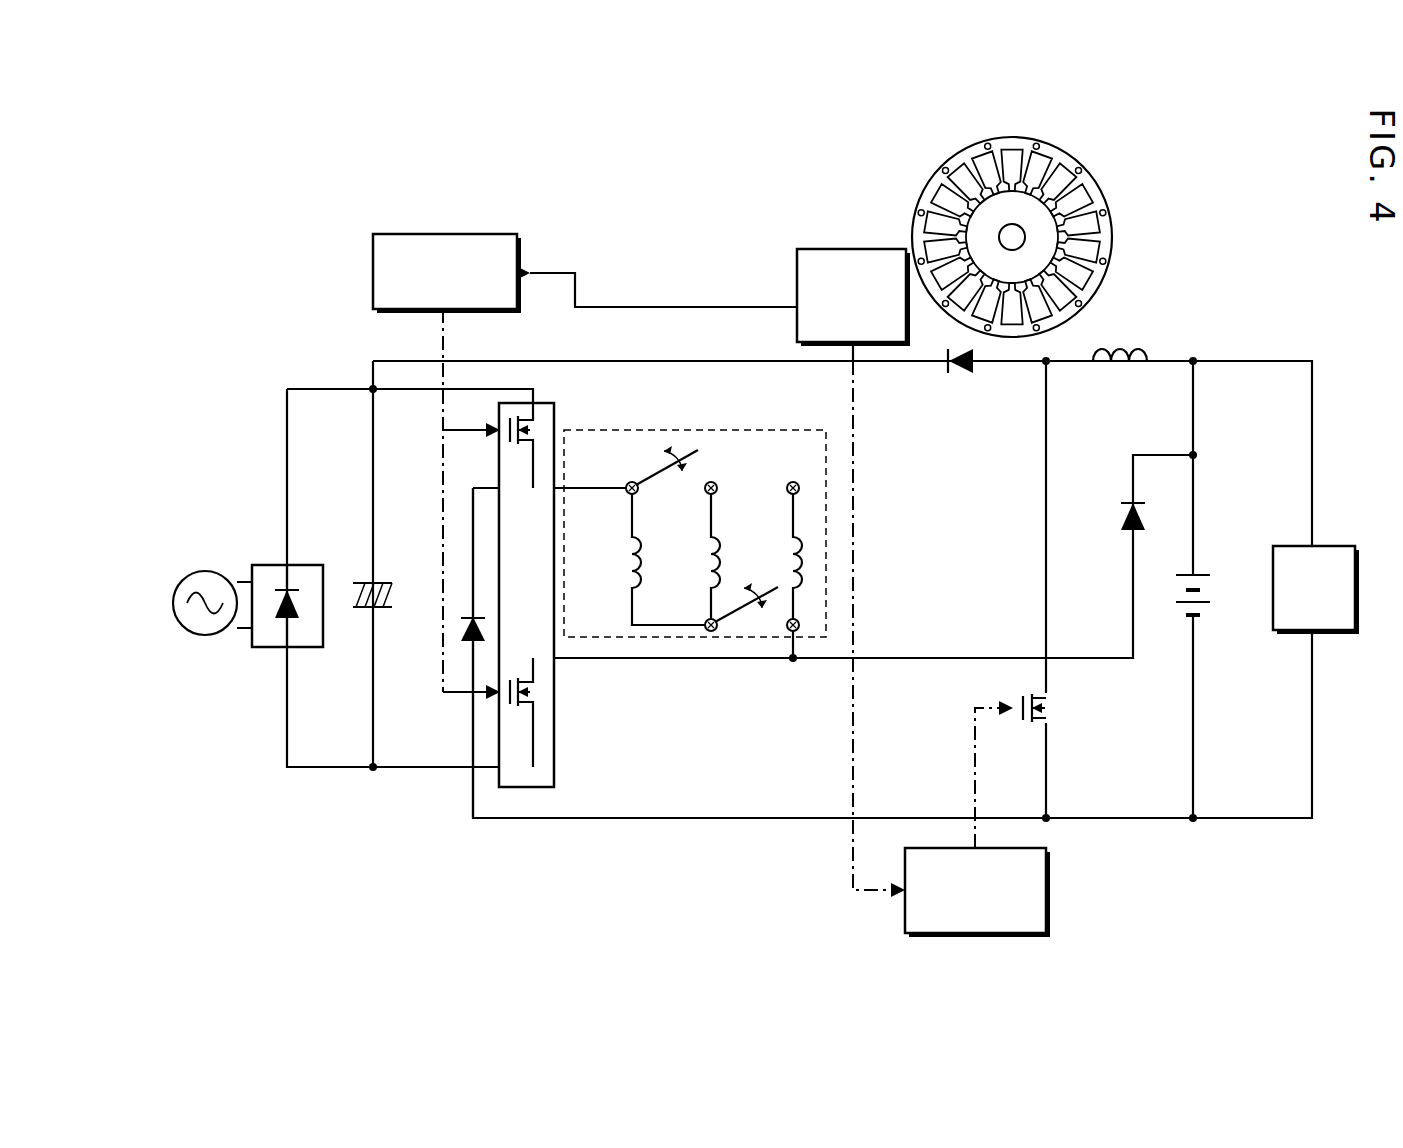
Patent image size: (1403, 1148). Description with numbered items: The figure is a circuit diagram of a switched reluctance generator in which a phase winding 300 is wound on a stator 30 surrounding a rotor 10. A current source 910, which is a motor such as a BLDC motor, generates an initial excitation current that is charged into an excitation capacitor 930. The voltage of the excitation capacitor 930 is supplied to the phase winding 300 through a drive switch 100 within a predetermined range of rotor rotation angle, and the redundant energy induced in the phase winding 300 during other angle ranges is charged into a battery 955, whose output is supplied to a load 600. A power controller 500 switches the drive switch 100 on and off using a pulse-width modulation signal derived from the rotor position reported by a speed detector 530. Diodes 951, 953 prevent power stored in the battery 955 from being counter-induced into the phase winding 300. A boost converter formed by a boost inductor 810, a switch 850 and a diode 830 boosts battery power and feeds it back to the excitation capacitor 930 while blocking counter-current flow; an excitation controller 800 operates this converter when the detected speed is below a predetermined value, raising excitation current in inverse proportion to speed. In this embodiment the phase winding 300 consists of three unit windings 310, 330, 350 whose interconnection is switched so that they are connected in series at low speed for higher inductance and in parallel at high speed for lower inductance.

The rotor 10 is at (1003, 222).
The stator 30 is at (935, 291).
The drive switch 100 is at (541, 607).
The phase winding 300 is at (695, 514).
The unit winding 310 is at (639, 535).
The unit winding 330 is at (710, 556).
The unit winding 350 is at (762, 570).
The power controller 500 is at (447, 273).
The speed detector 530 is at (853, 297).
The load 600 is at (1316, 590).
The excitation controller 800 is at (977, 892).
The boost inductor 810 is at (1120, 370).
The diode 830 is at (960, 366).
The switch 850 is at (1050, 724).
The current source 910 is at (286, 564).
The excitation capacitor 930 is at (356, 607).
The diode 951 is at (460, 636).
The diode 953 is at (1132, 515).
The battery 955 is at (1202, 578).